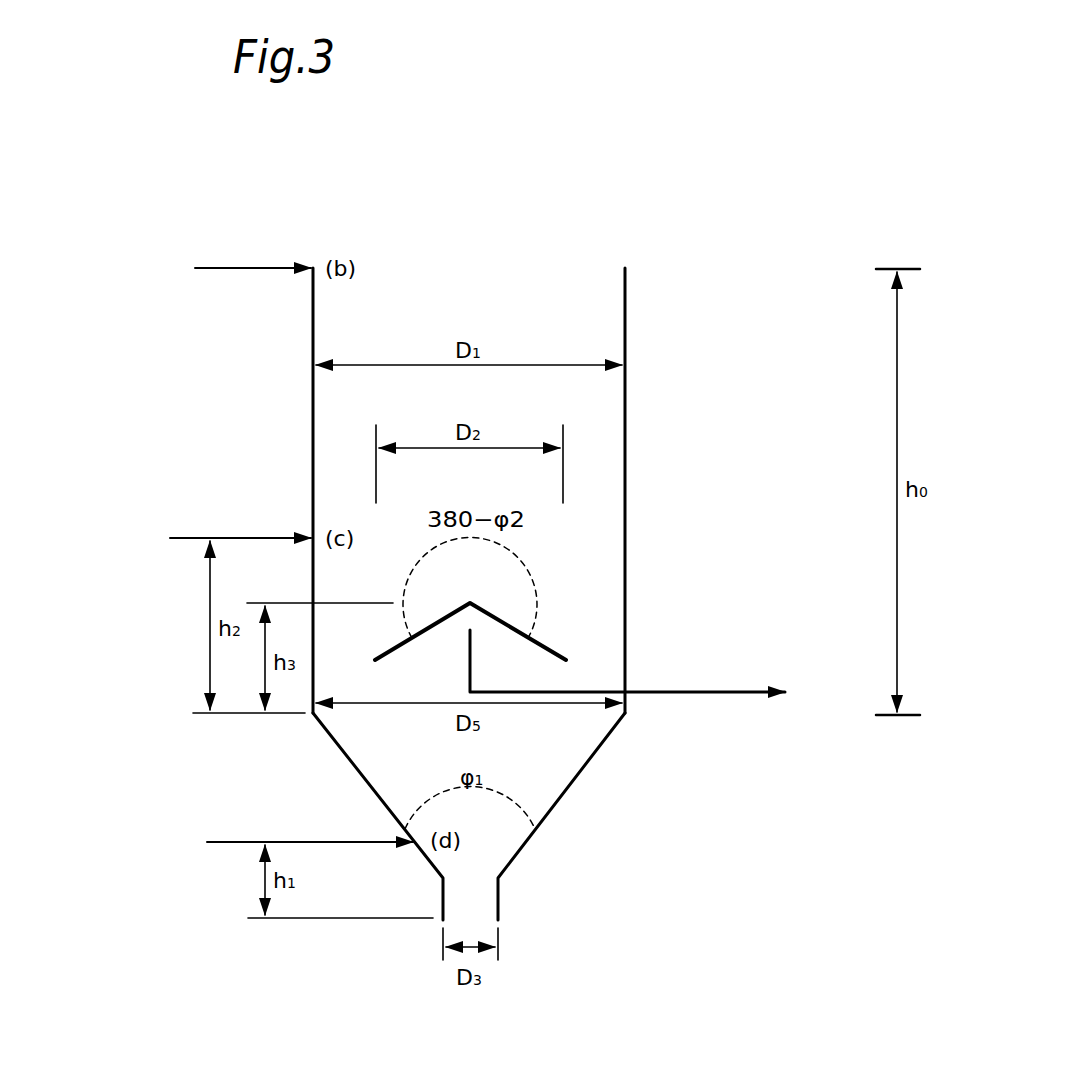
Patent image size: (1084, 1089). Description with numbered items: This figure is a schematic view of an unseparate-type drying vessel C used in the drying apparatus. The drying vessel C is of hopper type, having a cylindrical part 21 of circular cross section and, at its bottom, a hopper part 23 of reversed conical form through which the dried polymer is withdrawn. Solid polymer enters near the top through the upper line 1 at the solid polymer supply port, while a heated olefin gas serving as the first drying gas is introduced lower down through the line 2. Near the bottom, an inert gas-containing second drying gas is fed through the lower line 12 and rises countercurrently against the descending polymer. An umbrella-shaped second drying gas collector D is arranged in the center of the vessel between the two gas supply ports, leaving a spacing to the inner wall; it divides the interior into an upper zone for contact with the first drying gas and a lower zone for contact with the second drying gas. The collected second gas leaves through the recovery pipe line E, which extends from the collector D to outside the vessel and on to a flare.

The upper line 1 is at (240, 268).
The lower line 2 is at (245, 538).
The lower line 12 is at (290, 842).
The cylindrical part 21 is at (625, 400).
The hopper part 23 is at (567, 795).
The drying vessel C is at (625, 462).
The second drying gas collector D is at (540, 640).
The recovery pipe line E is at (671, 667).